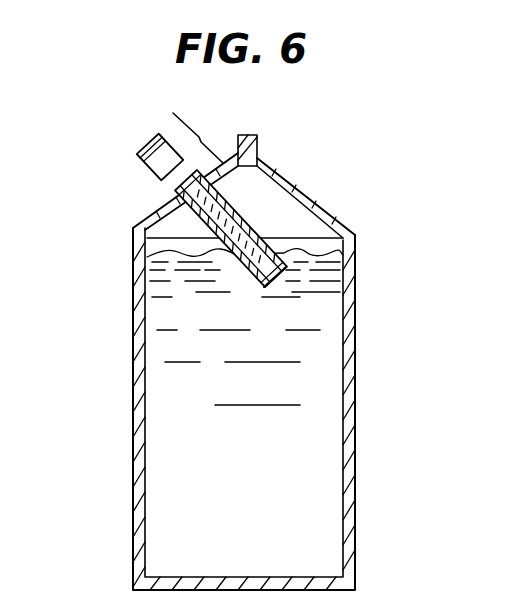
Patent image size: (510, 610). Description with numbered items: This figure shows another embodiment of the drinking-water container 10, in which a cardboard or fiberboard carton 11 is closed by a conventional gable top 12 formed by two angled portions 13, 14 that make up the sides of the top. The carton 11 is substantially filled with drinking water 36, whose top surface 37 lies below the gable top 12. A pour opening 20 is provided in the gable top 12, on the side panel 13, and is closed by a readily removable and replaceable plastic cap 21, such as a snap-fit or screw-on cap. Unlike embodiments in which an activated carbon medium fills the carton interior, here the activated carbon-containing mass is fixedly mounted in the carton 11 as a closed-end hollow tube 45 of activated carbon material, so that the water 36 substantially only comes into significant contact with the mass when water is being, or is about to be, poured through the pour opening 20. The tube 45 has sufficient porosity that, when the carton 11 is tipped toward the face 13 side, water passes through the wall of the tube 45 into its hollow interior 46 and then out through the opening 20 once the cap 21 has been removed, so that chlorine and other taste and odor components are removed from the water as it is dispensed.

The container 10 is at (63, 200).
The carton 11 is at (133, 400).
The gable top 12 is at (325, 93).
The angled portion 13 is at (133, 224).
The angled portion 14 is at (307, 196).
The pour opening 20 is at (172, 188).
The plastic cap 21 is at (137, 157).
The drinking water 36 is at (327, 310).
The top surface 37 is at (306, 252).
The closed end hollow tube 45 is at (246, 282).
The hollow interior 46 is at (232, 225).